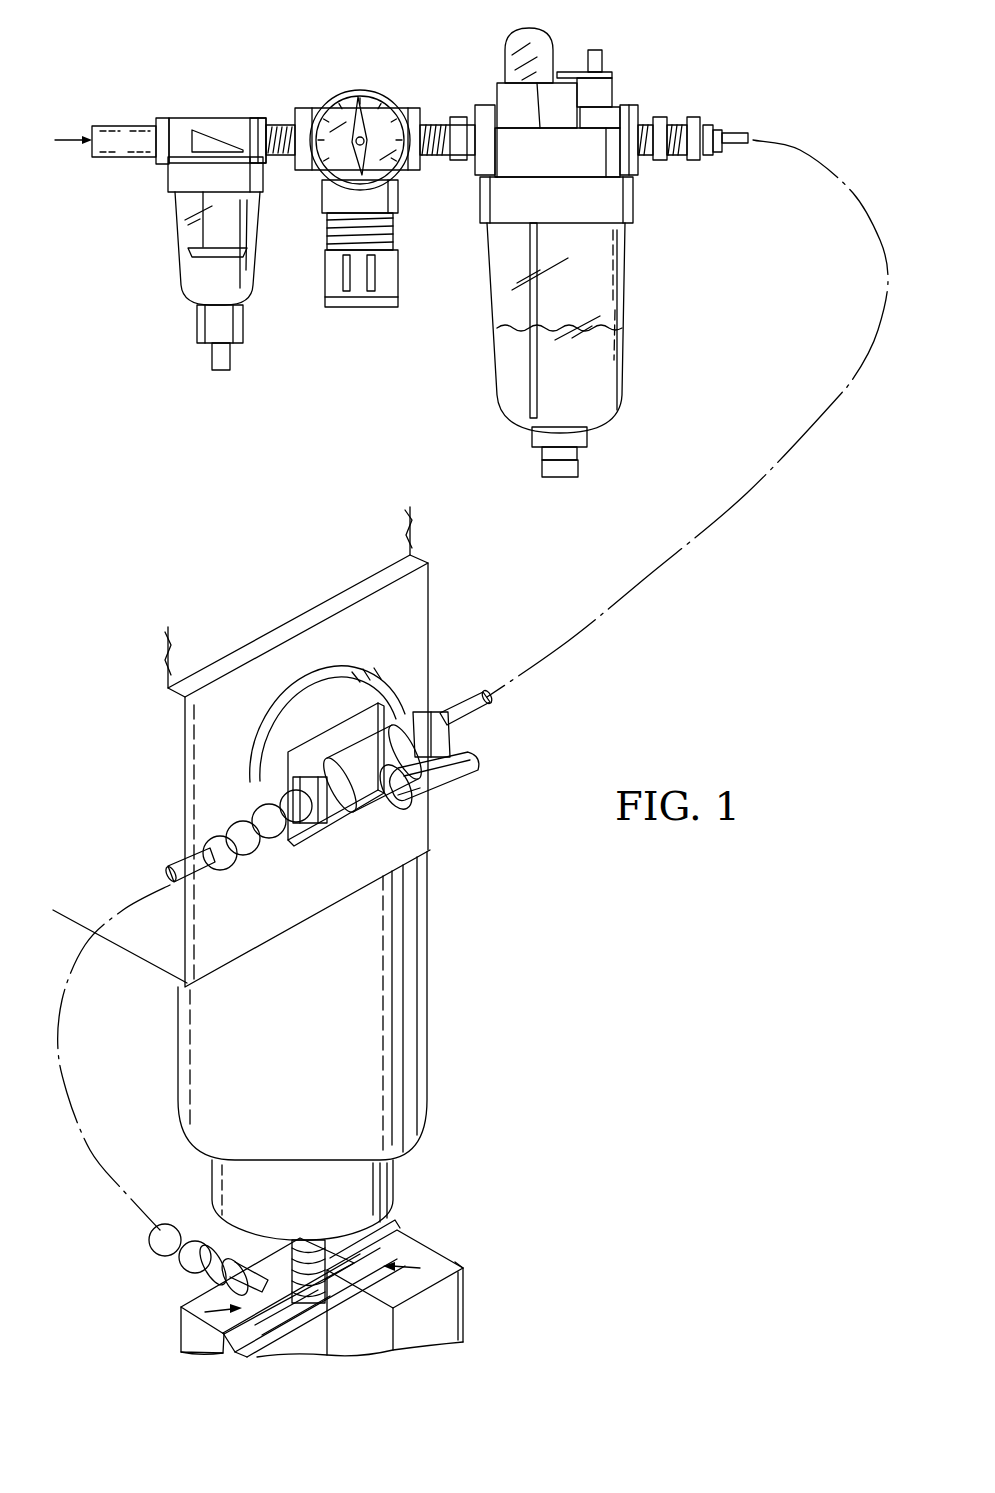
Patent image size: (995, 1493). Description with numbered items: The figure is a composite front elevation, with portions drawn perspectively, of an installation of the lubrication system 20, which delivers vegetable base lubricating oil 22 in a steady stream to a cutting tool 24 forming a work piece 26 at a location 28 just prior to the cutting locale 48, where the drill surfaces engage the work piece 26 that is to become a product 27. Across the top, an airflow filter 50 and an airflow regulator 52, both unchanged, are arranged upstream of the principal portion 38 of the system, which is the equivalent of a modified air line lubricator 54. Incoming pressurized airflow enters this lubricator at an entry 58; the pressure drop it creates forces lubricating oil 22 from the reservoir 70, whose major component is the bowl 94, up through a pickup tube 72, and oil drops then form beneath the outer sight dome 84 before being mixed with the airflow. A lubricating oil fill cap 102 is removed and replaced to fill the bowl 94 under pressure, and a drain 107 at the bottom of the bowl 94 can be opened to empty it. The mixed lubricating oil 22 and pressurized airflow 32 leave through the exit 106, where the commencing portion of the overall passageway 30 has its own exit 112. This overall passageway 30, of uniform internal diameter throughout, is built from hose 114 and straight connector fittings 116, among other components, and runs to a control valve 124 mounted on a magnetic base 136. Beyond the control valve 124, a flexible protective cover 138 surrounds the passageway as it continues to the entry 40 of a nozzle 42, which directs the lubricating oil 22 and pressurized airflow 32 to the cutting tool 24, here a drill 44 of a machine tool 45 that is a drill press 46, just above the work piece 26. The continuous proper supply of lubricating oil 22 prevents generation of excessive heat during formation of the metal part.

The lubrication system 20 is at (478, 110).
The lubricating oil 22 is at (565, 383).
The cutting tool 24 is at (182, 1345).
The work piece 26 is at (440, 1252).
The product 27 is at (460, 1270).
The location 28 is at (283, 1330).
The overall passageway 30 is at (730, 125).
The pressurized airflow 32 is at (262, 1260).
The principal portion 38 is at (634, 105).
The entry 40 is at (240, 1255).
The nozzle 42 is at (205, 1300).
The drill 44 is at (383, 1230).
The machine tool 45 is at (165, 658).
The drill press 46 is at (430, 1050).
The cutting locale 48 is at (335, 1300).
The airflow filter 50 is at (206, 118).
The airflow regulator 52 is at (330, 85).
The modified air line lubricator 54 is at (490, 75).
The entry 58 is at (470, 165).
The reservoir 70 is at (612, 388).
The pickup tube 72 is at (530, 365).
The outer sight dome 84 is at (548, 30).
The bowl 94 is at (495, 345).
The lubricating oil fill cap 102 is at (600, 50).
The exit 106 is at (652, 118).
The drain 107 is at (590, 474).
The exit 112 is at (648, 165).
The hose 114 is at (745, 128).
The straight connector fittings 116 is at (712, 160).
The control valve 124 is at (385, 725).
The magnetic base 136 is at (280, 722).
The flexible protective cover 138 is at (262, 862).